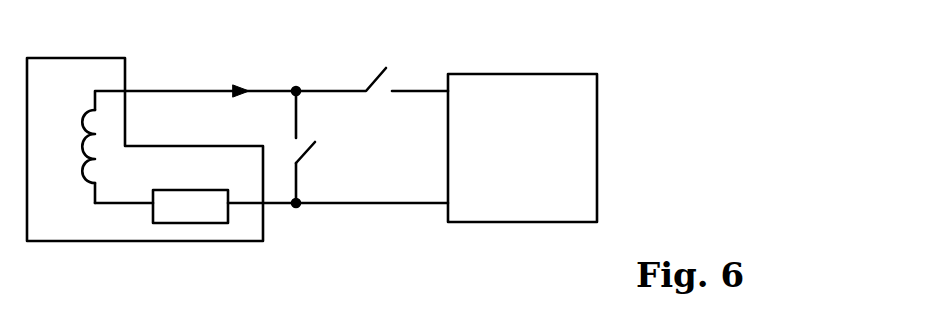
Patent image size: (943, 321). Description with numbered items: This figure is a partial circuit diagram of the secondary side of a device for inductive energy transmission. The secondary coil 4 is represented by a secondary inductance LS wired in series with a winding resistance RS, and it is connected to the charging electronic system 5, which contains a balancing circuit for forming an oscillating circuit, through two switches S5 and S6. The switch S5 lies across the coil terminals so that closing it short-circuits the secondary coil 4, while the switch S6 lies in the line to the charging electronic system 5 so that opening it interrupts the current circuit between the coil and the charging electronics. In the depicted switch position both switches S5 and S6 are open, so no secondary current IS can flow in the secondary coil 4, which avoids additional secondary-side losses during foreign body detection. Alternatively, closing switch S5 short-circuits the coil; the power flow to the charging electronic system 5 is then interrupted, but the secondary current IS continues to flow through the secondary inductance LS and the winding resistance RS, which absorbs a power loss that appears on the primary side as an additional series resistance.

The secondary coil 4 is at (161, 139).
The charging electronic system 5 is at (597, 137).
The secondary inductance LS is at (169, 147).
The winding resistance RS is at (195, 188).
The secondary current IS is at (242, 74).
The switch S5 is at (372, 147).
The switch S6 is at (372, 102).